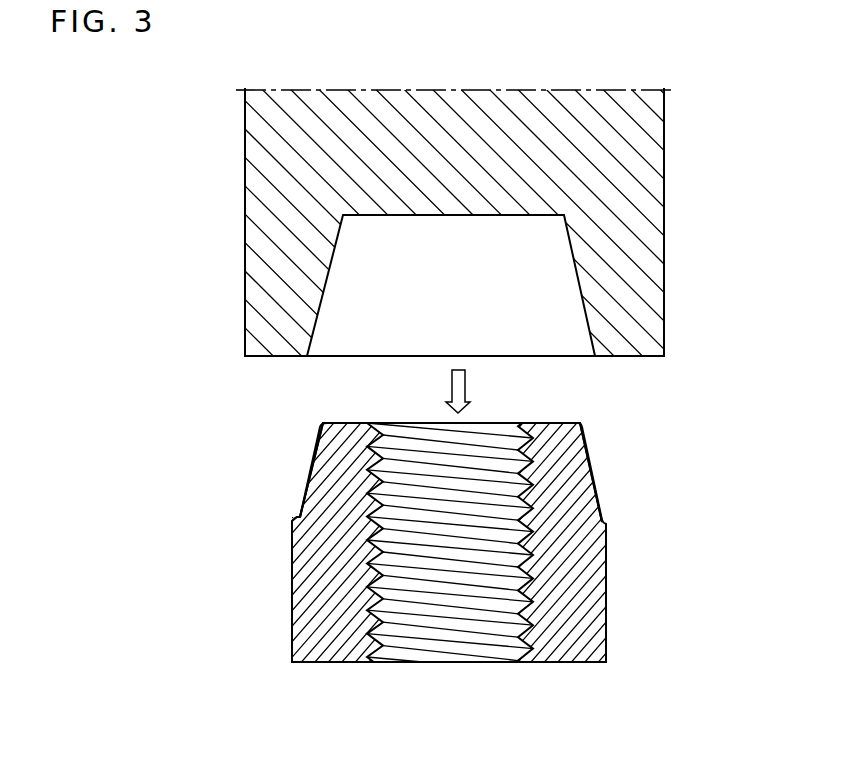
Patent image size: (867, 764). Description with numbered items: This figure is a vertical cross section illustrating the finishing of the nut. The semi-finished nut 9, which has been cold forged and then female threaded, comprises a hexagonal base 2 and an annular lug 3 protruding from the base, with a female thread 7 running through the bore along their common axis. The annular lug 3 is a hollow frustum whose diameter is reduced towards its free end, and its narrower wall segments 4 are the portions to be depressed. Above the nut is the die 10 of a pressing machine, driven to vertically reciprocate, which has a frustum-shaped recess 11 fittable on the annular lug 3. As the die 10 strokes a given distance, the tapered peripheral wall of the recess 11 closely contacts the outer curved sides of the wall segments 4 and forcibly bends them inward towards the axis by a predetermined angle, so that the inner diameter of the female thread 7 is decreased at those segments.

The die 10 is at (262, 164).
The recess 11 is at (326, 283).
The semi-finished nut 9 is at (649, 532).
The hexagonal base 2 is at (267, 626).
The annular lug 3 is at (284, 495).
The wall segments 4 is at (312, 457).
The female thread 7 is at (487, 648).